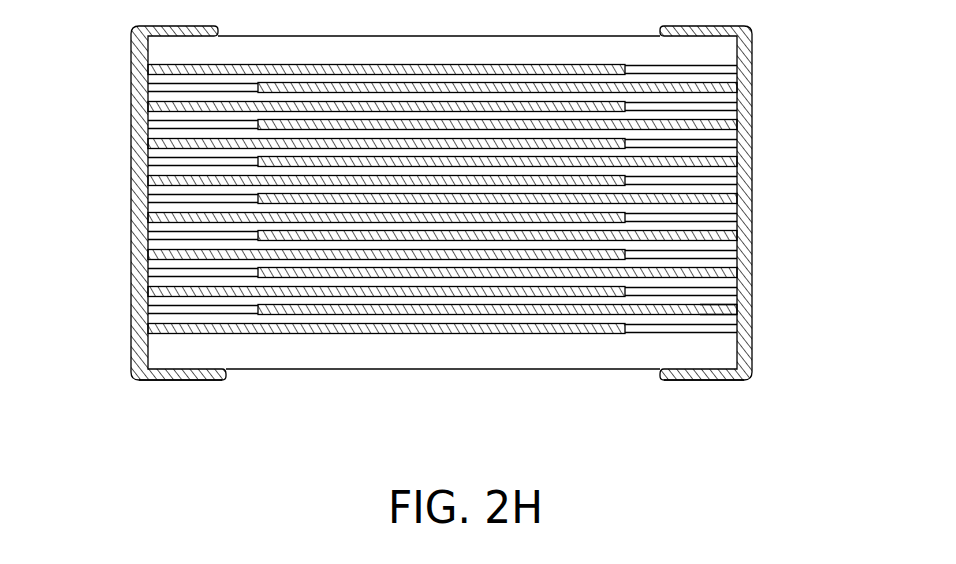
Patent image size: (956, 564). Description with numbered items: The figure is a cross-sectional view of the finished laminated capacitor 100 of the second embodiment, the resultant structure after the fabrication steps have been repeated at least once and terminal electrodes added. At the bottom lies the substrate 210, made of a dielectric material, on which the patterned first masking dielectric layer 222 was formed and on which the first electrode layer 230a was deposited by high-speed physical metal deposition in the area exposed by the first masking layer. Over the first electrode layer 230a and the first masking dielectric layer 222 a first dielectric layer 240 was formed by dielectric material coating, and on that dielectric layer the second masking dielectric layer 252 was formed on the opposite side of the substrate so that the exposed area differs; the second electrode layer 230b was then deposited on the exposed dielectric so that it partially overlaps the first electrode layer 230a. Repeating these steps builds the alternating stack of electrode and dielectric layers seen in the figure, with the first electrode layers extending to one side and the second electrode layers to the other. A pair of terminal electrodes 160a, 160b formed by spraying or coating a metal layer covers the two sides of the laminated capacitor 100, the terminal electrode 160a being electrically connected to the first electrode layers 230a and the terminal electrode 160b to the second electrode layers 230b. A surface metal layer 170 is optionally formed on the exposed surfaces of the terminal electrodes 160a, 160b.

The laminated capacitor 100 is at (300, 465).
The terminal electrode 160a is at (140, 252).
The terminal electrode 160b is at (748, 243).
The surface metal layer 170 is at (138, 378).
The substrate 210 is at (727, 350).
The first masking dielectric layer 222 is at (728, 329).
The first electrode layer 230a is at (148, 337).
The second electrode layer 230b is at (750, 302).
The first dielectric layer 240 is at (737, 310).
The second masking dielectric layer 252 is at (152, 318).